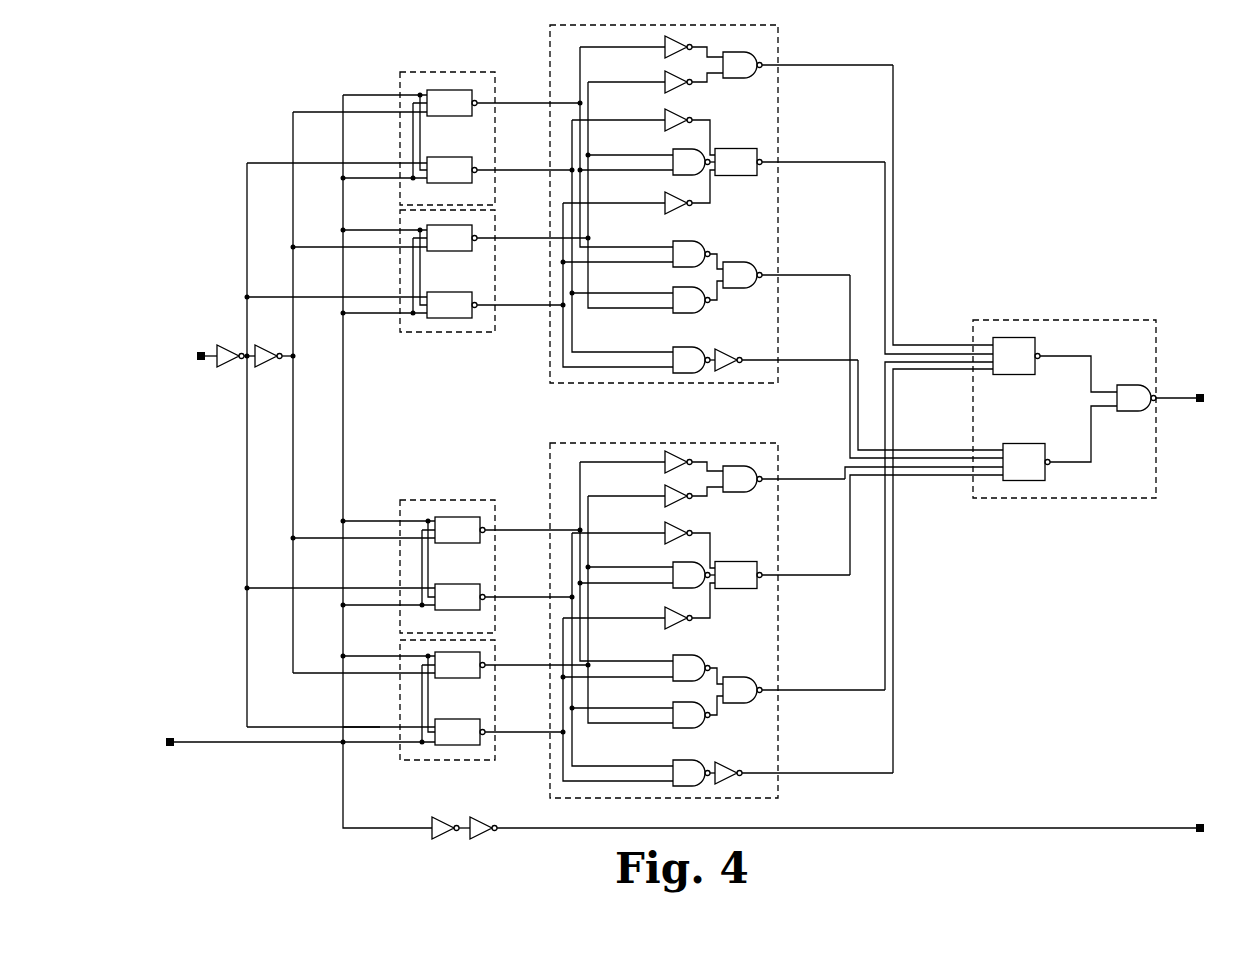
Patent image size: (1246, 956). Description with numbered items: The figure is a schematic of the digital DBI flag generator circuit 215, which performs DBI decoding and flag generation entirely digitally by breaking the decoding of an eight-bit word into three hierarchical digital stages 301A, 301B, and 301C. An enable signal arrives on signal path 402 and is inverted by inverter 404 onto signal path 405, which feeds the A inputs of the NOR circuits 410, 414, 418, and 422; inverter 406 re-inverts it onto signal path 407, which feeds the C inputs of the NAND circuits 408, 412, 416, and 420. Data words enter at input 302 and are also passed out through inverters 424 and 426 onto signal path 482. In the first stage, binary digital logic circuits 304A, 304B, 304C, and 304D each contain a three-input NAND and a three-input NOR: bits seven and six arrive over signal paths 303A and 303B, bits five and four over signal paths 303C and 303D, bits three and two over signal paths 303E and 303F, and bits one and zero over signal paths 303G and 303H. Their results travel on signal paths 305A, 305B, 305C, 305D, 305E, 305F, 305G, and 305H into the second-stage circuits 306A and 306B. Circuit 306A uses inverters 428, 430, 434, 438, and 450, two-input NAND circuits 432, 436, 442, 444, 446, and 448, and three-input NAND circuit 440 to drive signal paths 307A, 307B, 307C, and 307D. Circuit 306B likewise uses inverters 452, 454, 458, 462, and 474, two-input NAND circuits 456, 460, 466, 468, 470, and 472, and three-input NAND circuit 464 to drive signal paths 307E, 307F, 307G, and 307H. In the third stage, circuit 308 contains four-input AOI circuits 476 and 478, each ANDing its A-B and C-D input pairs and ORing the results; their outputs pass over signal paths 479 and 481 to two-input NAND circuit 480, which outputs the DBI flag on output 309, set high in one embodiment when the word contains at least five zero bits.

The digital DBI flag generator circuit 215 is at (176, 80).
The digital stage 301A is at (396, 76).
The digital stage 301B is at (550, 46).
The digital stage 301C is at (1046, 302).
The input 302 is at (170, 738).
The signal path 303A is at (370, 95).
The signal path 303B is at (380, 178).
The signal path 303C is at (378, 230).
The signal path 303D is at (372, 313).
The signal path 303E is at (380, 521).
The signal path 303F is at (380, 605).
The signal path 303G is at (380, 656).
The signal path 303H is at (380, 727).
The binary digital logic circuit 304A is at (400, 72).
The binary digital logic circuit 304B is at (470, 335).
The binary digital logic circuit 304C is at (410, 500).
The binary digital logic circuit 304D is at (410, 760).
The signal path 305A is at (518, 103).
The signal path 305B is at (520, 170).
The signal path 305C is at (520, 238).
The signal path 305D is at (520, 305).
The signal path 305E is at (520, 530).
The signal path 305F is at (520, 597).
The signal path 305G is at (525, 665).
The signal path 305H is at (520, 732).
The binary digital logic circuit 306A is at (778, 42).
The binary digital logic circuit 306B is at (778, 798).
The signal path 307A is at (893, 65).
The signal path 307B is at (830, 162).
The signal path 307C is at (824, 275).
The signal path 307D is at (820, 360).
The signal path 307E is at (818, 479).
The signal path 307F is at (818, 575).
The signal path 307G is at (828, 690).
The signal path 307H is at (826, 773).
The binary digital logic circuit 308 is at (1130, 320).
The output 309 is at (1200, 394).
The signal path 402 is at (197, 354).
The inverter 404 is at (226, 345).
The signal path 405 is at (247, 195).
The inverter 406 is at (266, 368).
The signal path 407 is at (293, 265).
The 3-input NAND circuit 408 is at (448, 90).
The 3-input NOR circuit 410 is at (456, 157).
The 3-input NAND circuit 412 is at (456, 252).
The 3-input NOR circuit 414 is at (446, 332).
The 3-input NAND circuit 416 is at (452, 517).
The 3-input NOR circuit 418 is at (456, 585).
The 3-input NAND circuit 420 is at (460, 677).
The 3-input NOR circuit 422 is at (458, 745).
The inverter 424 is at (442, 840).
The inverter 426 is at (482, 840).
The inverter 428 is at (665, 47).
The inverter 430 is at (665, 82).
The 2-input NAND circuit 432 is at (757, 53).
The inverter 434 is at (665, 120).
The 2-input NAND circuit 436 is at (673, 155).
The inverter 438 is at (665, 203).
The 3-input NAND circuit 440 is at (742, 148).
The 2-input NAND circuit 442 is at (673, 246).
The 2-input NAND circuit 444 is at (673, 293).
The 2-input NAND circuit 446 is at (740, 263).
The 2-input NAND circuit 448 is at (673, 352).
The inverter 450 is at (728, 349).
The inverter 452 is at (665, 458).
The inverter 454 is at (665, 496).
The 2-input NAND circuit 456 is at (738, 466).
The inverter 458 is at (665, 533).
The 2-input NAND circuit 460 is at (673, 567).
The inverter 462 is at (665, 618).
The 3-input NAND circuit 464 is at (742, 562).
The 2-input NAND circuit 466 is at (673, 660).
The 2-input NAND circuit 468 is at (673, 708).
The 2-input NAND circuit 470 is at (738, 678).
The 2-input NAND circuit 472 is at (673, 765).
The inverter 474 is at (728, 762).
The AOI circuit 476 is at (1008, 338).
The AOI circuit 478 is at (1018, 443).
The signal path 479 is at (1072, 356).
The 2-input NAND circuit 480 is at (1124, 385).
The signal path 481 is at (1068, 498).
The signal path 482 is at (1200, 824).